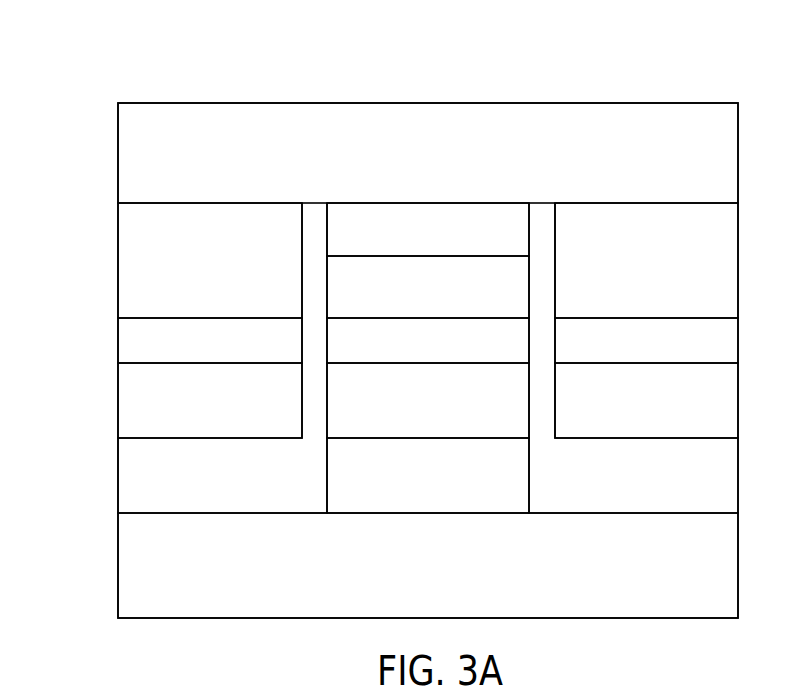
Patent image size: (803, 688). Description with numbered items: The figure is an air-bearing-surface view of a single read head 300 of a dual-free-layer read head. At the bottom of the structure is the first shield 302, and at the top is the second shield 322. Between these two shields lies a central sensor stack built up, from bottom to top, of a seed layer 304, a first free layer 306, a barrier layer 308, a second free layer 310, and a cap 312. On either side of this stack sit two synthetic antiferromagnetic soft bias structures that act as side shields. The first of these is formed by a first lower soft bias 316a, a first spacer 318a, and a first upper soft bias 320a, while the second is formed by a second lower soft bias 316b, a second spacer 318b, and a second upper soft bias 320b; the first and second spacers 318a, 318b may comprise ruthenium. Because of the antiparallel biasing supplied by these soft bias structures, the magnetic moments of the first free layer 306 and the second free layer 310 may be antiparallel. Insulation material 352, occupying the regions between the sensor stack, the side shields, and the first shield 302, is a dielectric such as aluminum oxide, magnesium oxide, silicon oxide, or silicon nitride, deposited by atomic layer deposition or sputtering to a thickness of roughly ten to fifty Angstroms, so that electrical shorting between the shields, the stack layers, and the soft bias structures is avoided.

The single read head 300 is at (168, 83).
The first shield (S1) 302 is at (406, 593).
The seed layer 304 is at (406, 504).
The first free layer (FL) 306 is at (406, 411).
The barrier layer 308 is at (406, 351).
The second FL 310 is at (406, 296).
The cap 312 is at (406, 244).
The first lower SB 316a is at (183, 411).
The second lower SB 316b is at (620, 411).
The first spacer 318a is at (183, 353).
The second spacer 318b is at (620, 353).
The first upper SB 320a is at (183, 256).
The second upper SB 320b is at (620, 258).
The second shield (S2) 322 is at (408, 189).
The insulation material 352 is at (187, 493).